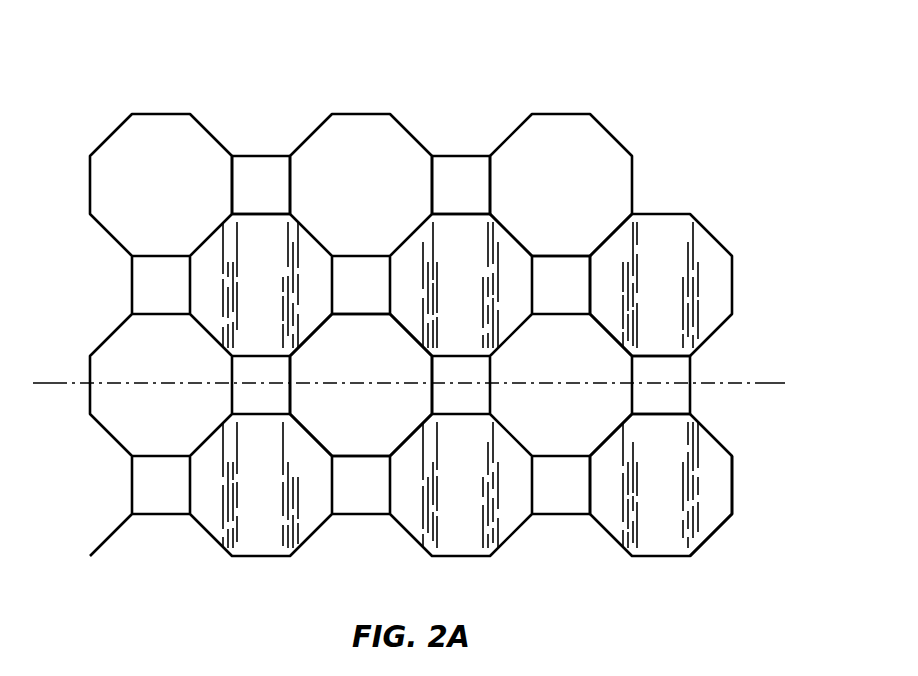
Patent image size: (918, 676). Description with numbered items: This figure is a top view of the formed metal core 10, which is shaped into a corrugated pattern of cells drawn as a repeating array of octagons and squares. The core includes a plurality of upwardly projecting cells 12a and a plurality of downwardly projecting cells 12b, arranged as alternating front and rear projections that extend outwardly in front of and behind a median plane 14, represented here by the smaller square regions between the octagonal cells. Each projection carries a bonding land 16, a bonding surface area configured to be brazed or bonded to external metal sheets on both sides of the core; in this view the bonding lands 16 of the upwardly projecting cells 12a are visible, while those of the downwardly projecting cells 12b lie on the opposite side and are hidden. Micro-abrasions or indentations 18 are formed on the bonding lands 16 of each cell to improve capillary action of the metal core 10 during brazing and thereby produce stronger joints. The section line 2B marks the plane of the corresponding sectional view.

The formed metal core 10 is at (436, 283).
The upwardly projecting cells 12a is at (710, 233).
The downwardly projecting cells 12b is at (560, 114).
The median plane 14 is at (263, 165).
The bonding land 16 is at (676, 497).
The micro-abrasions 18 is at (712, 516).
The section line 2B- 2B is at (785, 352).